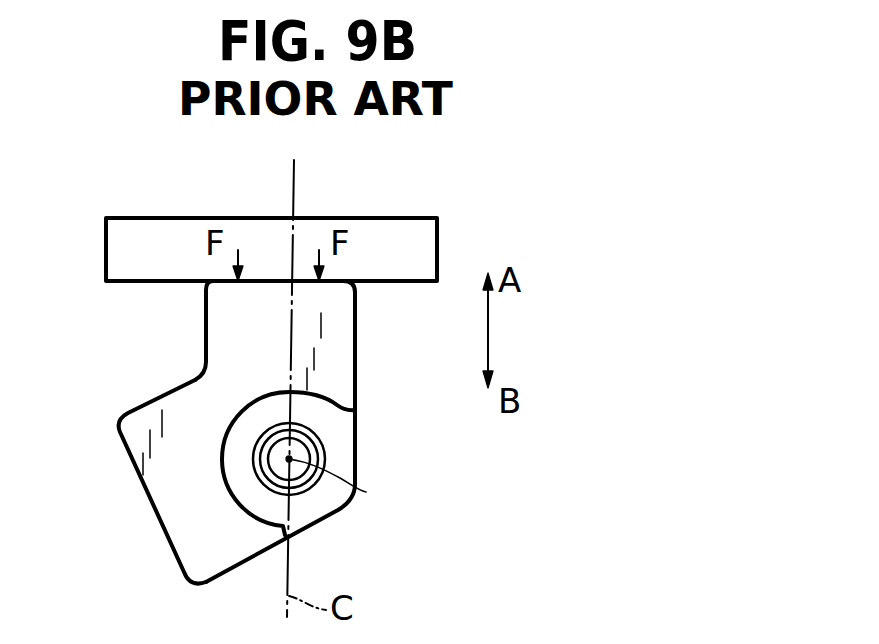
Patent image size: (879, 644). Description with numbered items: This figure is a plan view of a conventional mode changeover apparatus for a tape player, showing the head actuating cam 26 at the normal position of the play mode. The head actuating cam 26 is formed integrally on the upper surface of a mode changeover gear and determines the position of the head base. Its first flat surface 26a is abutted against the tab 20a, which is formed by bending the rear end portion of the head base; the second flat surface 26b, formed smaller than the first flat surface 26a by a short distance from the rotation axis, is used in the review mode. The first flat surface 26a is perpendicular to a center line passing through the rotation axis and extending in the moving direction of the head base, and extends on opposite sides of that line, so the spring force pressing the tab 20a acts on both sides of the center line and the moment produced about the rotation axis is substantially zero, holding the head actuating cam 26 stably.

The tab 20a is at (415, 246).
The head actuating cam 26 is at (278, 447).
The first flat surface 26a is at (261, 283).
The second flat surface 26b is at (158, 525).